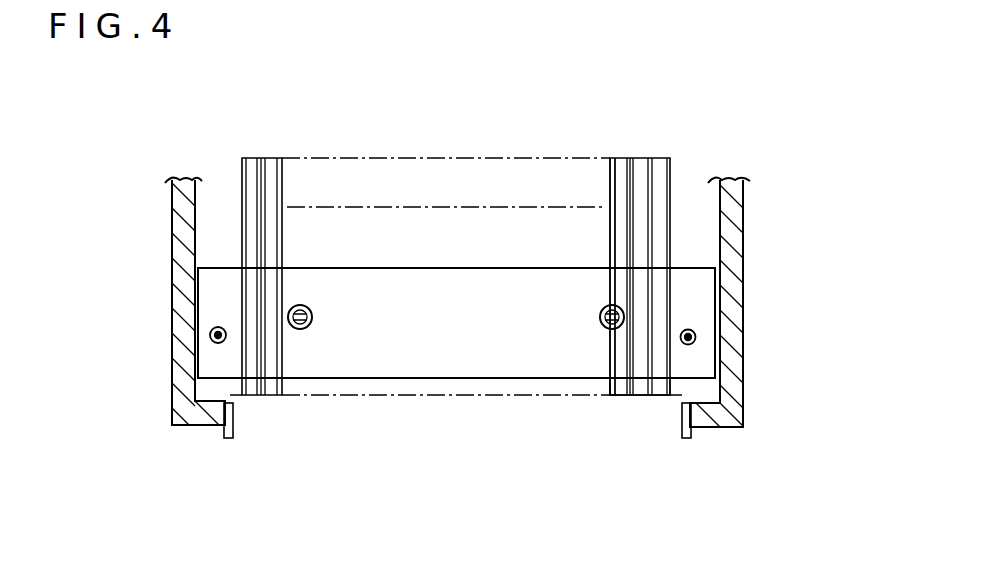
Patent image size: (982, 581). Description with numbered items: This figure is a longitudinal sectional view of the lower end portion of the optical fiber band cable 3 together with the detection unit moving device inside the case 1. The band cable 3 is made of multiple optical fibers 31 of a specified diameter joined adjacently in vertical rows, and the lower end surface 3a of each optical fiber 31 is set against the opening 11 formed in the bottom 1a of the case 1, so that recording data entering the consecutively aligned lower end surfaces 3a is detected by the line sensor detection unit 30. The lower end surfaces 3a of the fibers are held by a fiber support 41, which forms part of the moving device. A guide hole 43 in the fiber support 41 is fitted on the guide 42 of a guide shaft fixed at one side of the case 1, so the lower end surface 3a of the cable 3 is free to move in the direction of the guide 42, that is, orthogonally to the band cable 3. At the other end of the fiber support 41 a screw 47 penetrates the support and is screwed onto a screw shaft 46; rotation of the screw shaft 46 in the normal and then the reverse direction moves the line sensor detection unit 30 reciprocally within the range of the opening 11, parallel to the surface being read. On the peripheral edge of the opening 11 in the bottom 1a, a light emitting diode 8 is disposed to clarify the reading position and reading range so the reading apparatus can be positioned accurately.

The case 1 is at (745, 208).
The bottom 1a is at (710, 428).
The optical fiber band cable 3 is at (680, 178).
The lower end surface 3a is at (618, 400).
The light emitting diode 8 is at (225, 440).
The opening 11 is at (345, 413).
The line sensor detection unit 30 is at (478, 402).
The optical fiber 31 is at (619, 160).
The fiber support 41 is at (213, 277).
The guide 42 is at (700, 334).
The guide hole 43 is at (700, 343).
The screw shaft 46 is at (212, 332).
The screw 47 is at (212, 340).